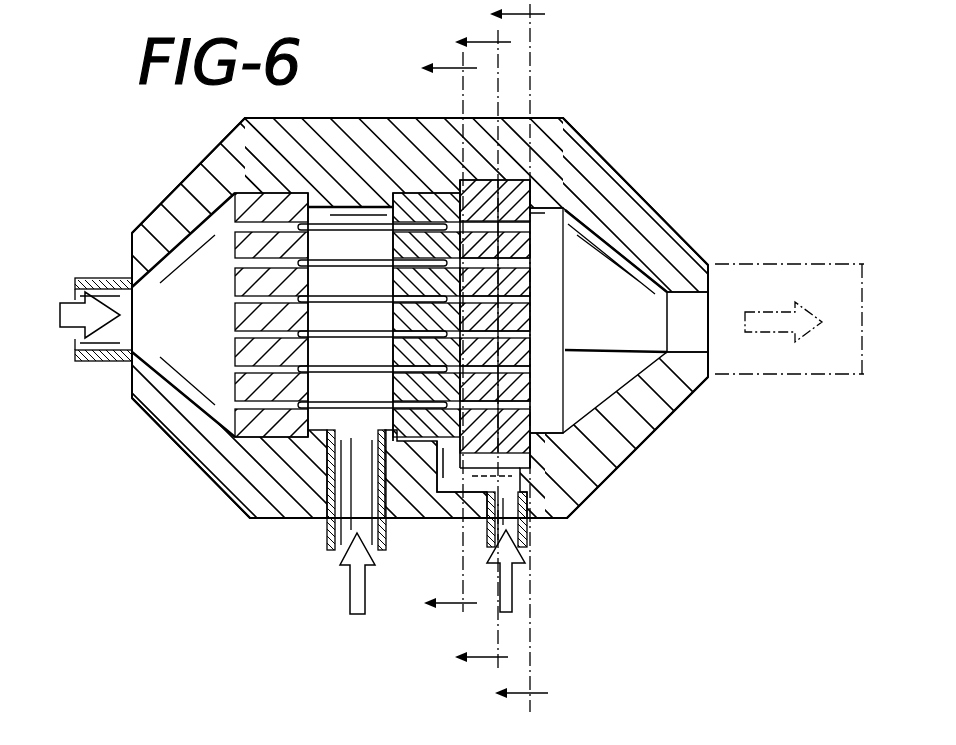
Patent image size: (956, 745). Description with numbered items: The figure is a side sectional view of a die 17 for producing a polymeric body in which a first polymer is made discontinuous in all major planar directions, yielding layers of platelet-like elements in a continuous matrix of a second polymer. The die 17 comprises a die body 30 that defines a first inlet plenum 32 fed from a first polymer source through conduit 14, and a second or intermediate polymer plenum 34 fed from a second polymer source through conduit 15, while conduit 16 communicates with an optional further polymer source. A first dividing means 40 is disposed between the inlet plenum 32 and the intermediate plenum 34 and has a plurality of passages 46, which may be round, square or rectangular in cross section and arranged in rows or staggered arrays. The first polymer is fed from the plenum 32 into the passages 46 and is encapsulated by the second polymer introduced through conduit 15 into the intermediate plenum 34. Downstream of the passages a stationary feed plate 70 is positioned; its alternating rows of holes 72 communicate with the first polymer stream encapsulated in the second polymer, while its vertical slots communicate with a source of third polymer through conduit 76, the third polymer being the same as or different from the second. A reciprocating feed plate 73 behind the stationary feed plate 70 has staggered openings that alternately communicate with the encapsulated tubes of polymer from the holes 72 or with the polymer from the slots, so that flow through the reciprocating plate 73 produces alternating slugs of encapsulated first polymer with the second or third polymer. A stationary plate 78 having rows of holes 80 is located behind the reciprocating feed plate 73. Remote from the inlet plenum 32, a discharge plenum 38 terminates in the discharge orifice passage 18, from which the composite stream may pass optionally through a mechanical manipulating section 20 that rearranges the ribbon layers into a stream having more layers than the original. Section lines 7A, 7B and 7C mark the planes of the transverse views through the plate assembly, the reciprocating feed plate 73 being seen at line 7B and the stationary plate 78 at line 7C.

The conduit 14 is at (110, 278).
The conduit 15 is at (327, 545).
The conduit 16 is at (530, 532).
The die 17 is at (183, 160).
The discharge orifice passage 18 is at (697, 310).
The mechanical manipulating section 20 is at (780, 385).
The die body 30 is at (192, 460).
The first inlet plenum 32 is at (187, 245).
The intermediate polymer plenum 34 is at (330, 207).
The discharge plenum 38 is at (612, 278).
The first dividing means 40 is at (252, 160).
The passages 46 is at (235, 364).
The stationary feed plate 70 is at (440, 196).
The holes 72 is at (417, 203).
The reciprocating feed plate 73 is at (528, 172).
The conduit 76 is at (447, 494).
The stationary plate 78 is at (505, 185).
The holes 80 is at (522, 370).
The section line 7A is at (431, 335).
The section line 7B is at (464, 350).
The section line 7C is at (501, 356).